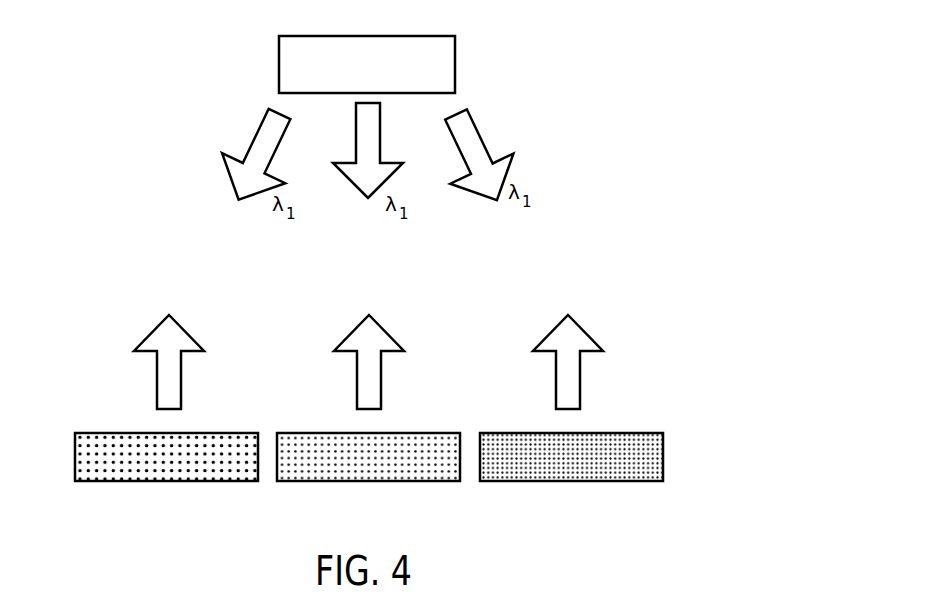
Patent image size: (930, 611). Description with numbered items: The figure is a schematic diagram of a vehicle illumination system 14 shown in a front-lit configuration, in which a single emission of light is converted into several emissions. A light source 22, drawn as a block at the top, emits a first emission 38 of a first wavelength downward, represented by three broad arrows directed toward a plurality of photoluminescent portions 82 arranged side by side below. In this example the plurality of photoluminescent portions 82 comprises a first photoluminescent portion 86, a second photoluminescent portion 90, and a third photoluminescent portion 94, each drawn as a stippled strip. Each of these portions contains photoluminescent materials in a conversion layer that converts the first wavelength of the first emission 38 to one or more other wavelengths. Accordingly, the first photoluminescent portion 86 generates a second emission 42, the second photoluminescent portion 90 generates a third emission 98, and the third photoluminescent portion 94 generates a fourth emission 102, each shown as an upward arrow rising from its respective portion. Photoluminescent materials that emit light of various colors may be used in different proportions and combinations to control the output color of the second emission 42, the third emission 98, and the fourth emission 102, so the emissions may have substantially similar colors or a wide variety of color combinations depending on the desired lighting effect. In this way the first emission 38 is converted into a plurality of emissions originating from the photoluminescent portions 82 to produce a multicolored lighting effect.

The illumination system 14 is at (671, 82).
The light source 22 is at (380, 73).
The first emission 38 is at (283, 140).
The second emission 42 is at (153, 337).
The plurality of photoluminescent portions 82 is at (345, 475).
The first photoluminescent portion 86 is at (97, 437).
The second photoluminescent portion 90 is at (333, 437).
The third photoluminescent portion 94 is at (527, 437).
The third emission 98 is at (345, 330).
The fourth emission 102 is at (553, 333).